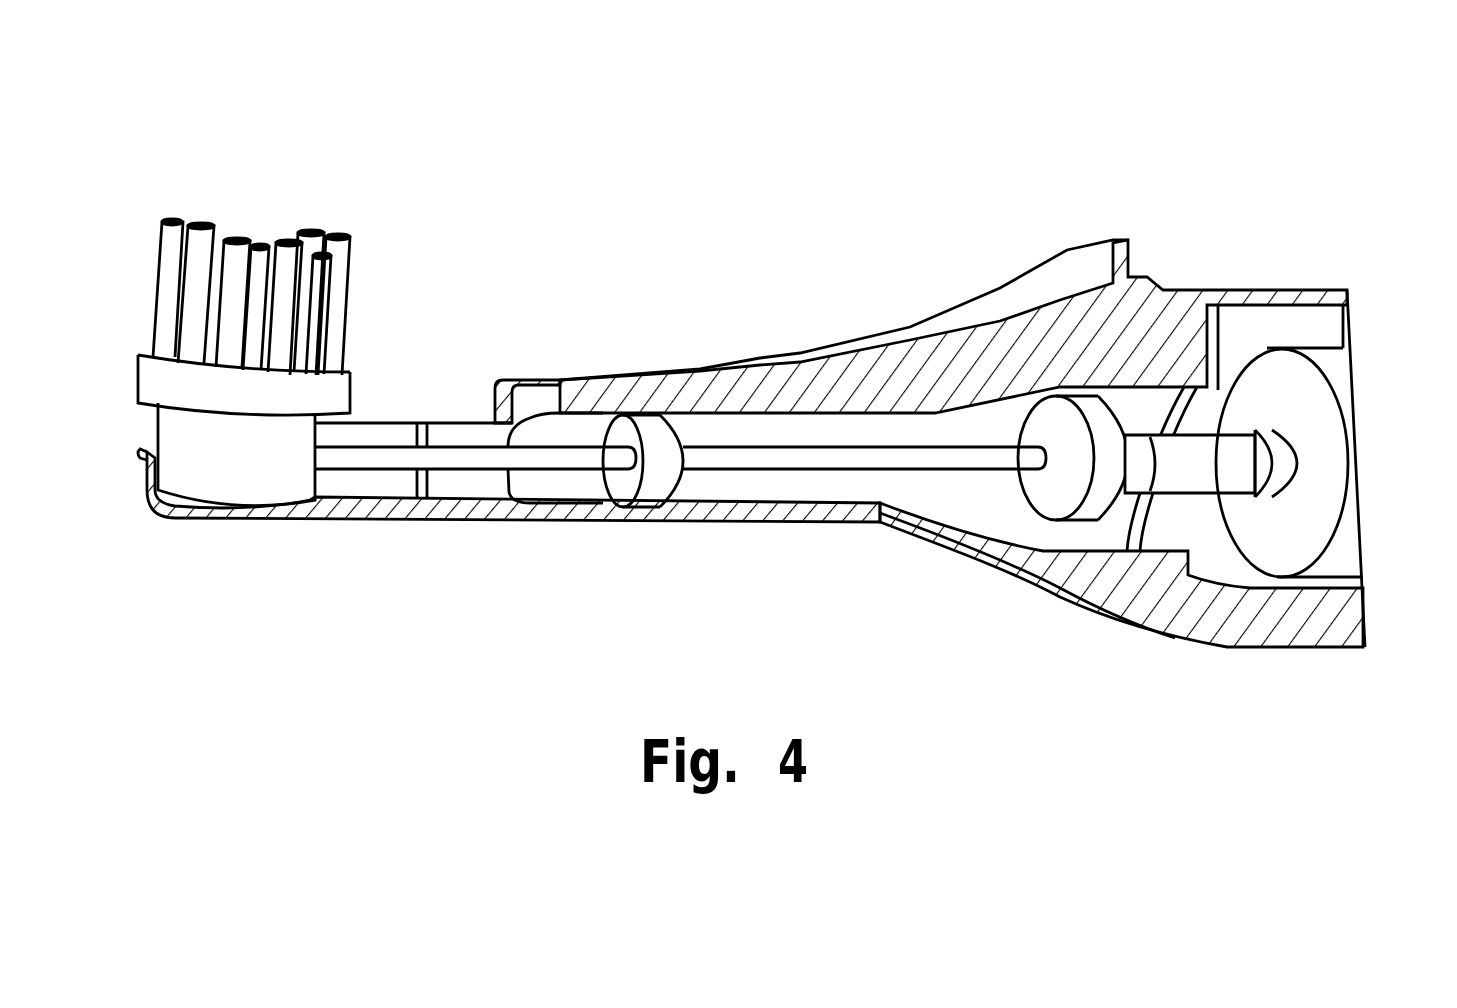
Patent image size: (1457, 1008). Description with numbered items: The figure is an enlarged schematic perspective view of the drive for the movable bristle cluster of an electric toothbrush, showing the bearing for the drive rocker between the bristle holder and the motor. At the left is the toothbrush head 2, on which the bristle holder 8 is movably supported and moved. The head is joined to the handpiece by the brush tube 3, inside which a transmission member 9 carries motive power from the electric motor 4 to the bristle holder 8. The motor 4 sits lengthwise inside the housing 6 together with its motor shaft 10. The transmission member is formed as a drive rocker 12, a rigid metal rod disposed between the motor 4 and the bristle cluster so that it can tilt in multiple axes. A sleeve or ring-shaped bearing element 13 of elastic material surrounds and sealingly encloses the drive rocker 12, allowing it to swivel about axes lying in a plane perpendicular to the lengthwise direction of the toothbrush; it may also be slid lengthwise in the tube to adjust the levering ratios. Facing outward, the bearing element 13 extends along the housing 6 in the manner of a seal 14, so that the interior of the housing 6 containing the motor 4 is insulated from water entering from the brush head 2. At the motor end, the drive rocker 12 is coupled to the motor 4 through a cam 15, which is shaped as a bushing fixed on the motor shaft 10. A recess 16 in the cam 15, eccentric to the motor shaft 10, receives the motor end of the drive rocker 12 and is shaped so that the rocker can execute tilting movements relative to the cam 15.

The toothbrush head 2 is at (227, 542).
The brush tube 3 is at (725, 515).
The electric motor 4 is at (1318, 460).
The housing 6 is at (1032, 290).
The bristle holder 8 is at (330, 392).
The transmission member 9 is at (880, 490).
The motor shaft 10 is at (1148, 458).
The drive rocker 12 is at (758, 468).
The bearing element 13 is at (670, 444).
The seal 14 is at (623, 494).
The cam 15 is at (1112, 487).
The recess 16 is at (953, 548).